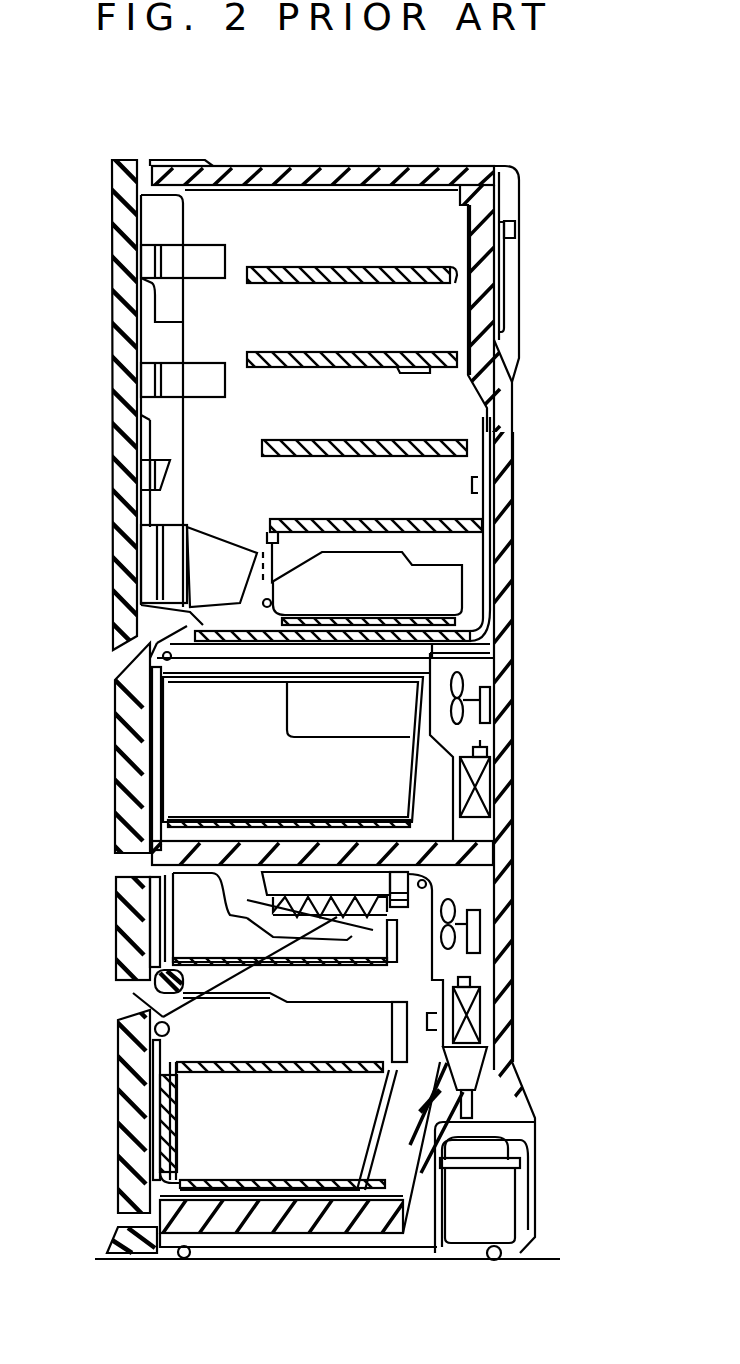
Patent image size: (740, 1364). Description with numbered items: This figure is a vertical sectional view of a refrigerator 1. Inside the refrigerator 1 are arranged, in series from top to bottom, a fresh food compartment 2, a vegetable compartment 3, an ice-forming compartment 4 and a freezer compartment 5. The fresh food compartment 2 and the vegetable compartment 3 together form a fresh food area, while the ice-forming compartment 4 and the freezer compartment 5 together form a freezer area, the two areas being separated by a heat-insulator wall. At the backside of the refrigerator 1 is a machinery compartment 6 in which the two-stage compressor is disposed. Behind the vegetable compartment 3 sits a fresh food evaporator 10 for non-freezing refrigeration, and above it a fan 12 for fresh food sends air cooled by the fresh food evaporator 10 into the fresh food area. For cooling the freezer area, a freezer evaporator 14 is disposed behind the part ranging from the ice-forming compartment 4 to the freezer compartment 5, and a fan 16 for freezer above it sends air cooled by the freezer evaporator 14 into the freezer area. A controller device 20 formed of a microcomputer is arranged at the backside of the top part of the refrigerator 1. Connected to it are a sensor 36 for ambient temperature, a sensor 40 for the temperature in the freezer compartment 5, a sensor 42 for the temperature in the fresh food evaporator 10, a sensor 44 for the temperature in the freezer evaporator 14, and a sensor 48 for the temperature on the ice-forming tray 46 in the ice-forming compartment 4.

The refrigerator 1 is at (317, 100).
The fresh food compartment 2 is at (258, 222).
The vegetable compartment 3 is at (182, 768).
The ice-forming compartment 4 is at (178, 918).
The freezer compartment 5 is at (197, 1138).
The machinery compartment 6 is at (475, 1131).
The fresh food evaporator 10 is at (478, 790).
The fan for fresh food 12 is at (490, 702).
The freezer evaporator 14 is at (472, 1005).
The fan for freezer 16 is at (475, 905).
The controller device 20 is at (500, 297).
The sensor for detecting ambient temperature 36 is at (515, 227).
The sensor for detecting freezer compartment temperature 40 is at (437, 1023).
The sensor for detecting fresh food evaporator temperature 42 is at (487, 748).
The sensor for detecting freezer evaporator temperature 44 is at (466, 975).
The ice-forming tray 46 is at (357, 884).
The sensor for detecting ice-forming tray temperature 48 is at (120, 1017).